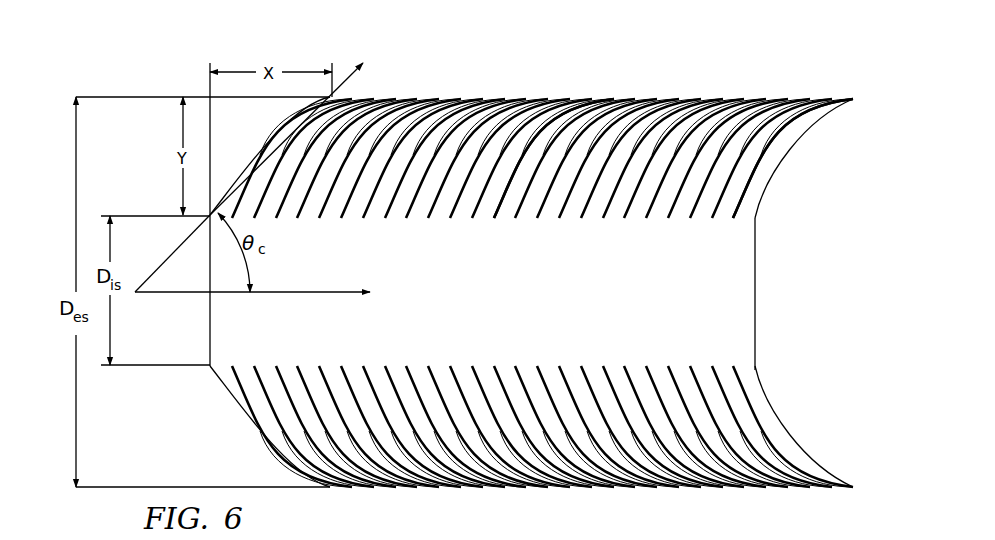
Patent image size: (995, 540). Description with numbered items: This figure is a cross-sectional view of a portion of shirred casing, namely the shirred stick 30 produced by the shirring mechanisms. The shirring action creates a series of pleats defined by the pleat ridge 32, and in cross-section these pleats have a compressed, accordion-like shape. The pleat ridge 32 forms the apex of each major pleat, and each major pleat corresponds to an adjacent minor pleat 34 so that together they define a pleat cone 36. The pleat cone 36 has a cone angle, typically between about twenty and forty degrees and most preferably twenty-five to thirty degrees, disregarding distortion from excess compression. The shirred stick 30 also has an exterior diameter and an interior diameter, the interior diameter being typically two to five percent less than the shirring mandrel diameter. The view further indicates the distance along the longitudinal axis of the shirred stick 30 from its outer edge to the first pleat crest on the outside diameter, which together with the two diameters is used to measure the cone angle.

The shirred stick 30 is at (724, 64).
The pleat ridge 32 is at (625, 98).
The minor pleat 34 is at (735, 218).
The pleat cone 36 is at (505, 210).